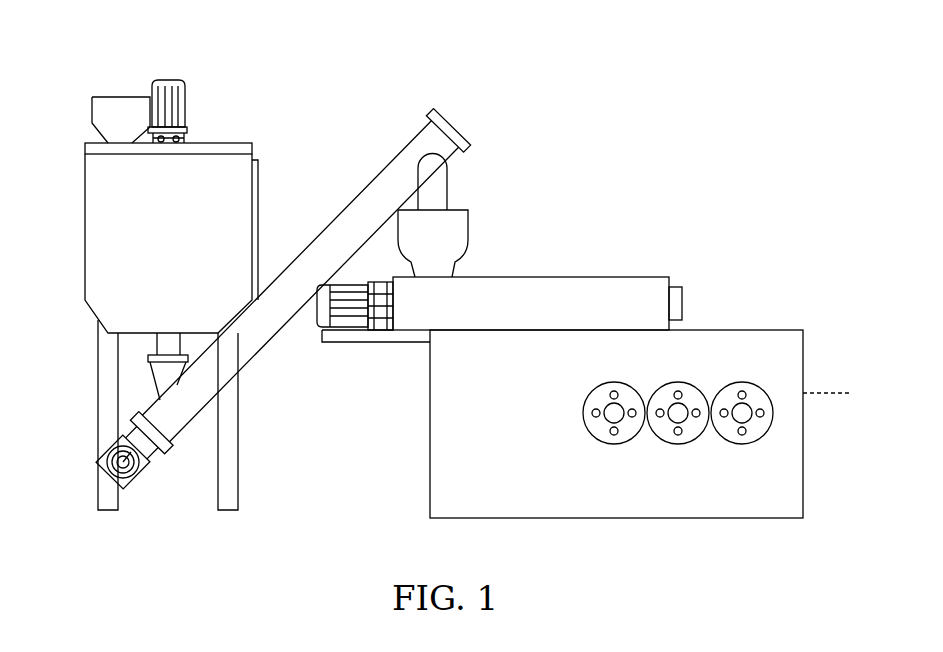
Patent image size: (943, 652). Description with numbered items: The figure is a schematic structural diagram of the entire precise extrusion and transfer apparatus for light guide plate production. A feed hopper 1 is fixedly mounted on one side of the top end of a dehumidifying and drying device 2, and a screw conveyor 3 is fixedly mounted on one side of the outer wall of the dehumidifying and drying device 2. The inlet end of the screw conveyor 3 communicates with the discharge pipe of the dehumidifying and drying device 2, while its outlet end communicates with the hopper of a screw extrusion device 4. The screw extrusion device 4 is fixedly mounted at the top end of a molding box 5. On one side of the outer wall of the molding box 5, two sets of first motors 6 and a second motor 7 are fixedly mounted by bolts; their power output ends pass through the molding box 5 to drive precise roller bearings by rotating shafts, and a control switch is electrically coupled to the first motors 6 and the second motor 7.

The feed hopper 1 is at (120, 127).
The dehumidifying and drying device 2 is at (98, 275).
The screw conveyor 3 is at (363, 213).
The screw extrusion device 4 is at (528, 298).
The molding box 5 is at (730, 345).
The first motor 6 is at (753, 427).
The second motor 7 is at (688, 432).